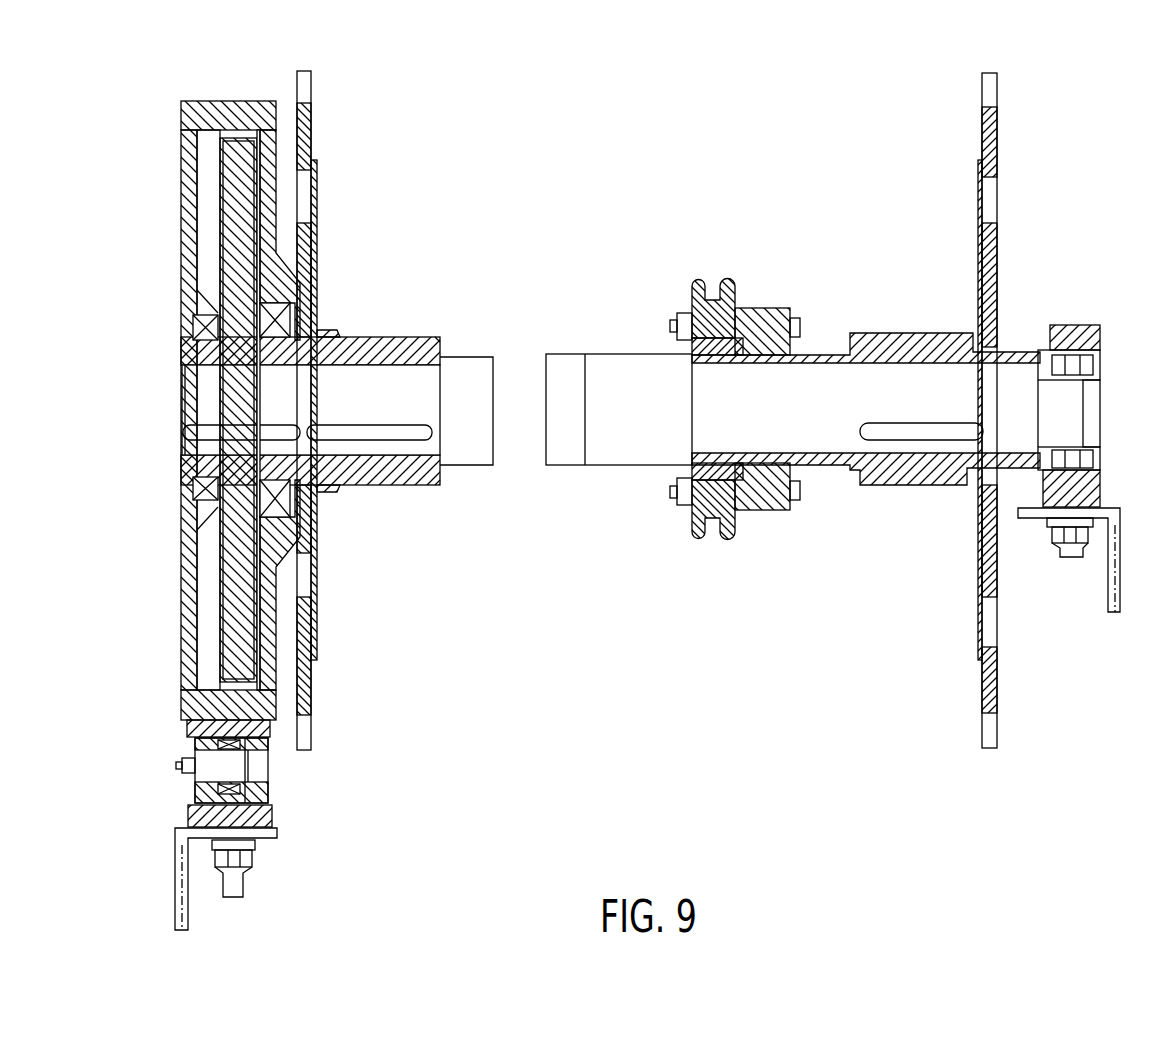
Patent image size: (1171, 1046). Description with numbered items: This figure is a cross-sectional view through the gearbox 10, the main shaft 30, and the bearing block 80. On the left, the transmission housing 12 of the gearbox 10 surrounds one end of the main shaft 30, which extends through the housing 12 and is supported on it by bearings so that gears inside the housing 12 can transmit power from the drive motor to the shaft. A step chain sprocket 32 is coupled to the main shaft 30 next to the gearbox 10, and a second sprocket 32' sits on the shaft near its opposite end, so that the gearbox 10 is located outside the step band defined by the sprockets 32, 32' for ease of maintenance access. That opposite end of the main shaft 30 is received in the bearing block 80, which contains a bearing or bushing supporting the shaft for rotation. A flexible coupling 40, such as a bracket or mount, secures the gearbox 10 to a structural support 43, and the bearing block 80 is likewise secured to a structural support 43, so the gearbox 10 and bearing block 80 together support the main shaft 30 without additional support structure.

The gearbox 10 is at (186, 226).
The transmission housing 12 is at (190, 697).
The main shaft 30 is at (619, 360).
The step chain sprocket 32 is at (335, 410).
The step chain sprocket 32' is at (1017, 410).
The flexible coupling 40 is at (266, 797).
The structural support 43 is at (182, 857).
The bearing block 80 is at (1097, 493).